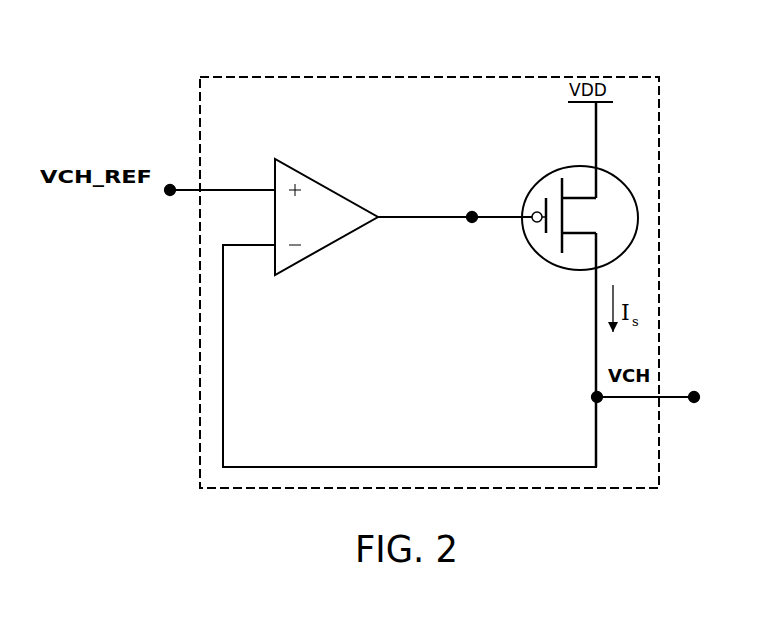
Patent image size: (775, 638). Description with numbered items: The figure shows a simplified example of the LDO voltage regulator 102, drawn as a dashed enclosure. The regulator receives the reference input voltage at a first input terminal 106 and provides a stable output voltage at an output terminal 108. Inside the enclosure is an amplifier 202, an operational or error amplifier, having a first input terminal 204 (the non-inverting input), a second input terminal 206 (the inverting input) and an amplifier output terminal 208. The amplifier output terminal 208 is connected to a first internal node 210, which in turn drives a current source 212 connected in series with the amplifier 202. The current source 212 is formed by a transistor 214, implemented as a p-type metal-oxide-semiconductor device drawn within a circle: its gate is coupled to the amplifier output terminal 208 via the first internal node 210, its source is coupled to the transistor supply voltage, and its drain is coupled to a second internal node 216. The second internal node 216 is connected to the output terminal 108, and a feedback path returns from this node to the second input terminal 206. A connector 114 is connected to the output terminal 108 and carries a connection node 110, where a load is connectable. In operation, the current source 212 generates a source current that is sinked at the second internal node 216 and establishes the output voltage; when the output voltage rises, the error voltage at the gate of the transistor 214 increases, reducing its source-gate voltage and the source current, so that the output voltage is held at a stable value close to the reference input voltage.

The LDO voltage regulator 102 is at (479, 73).
The first input terminal 106 is at (177, 180).
The output terminal 108 is at (645, 411).
The connection node 110 is at (703, 400).
The connector 114 is at (679, 391).
The amplifier 202 is at (326, 215).
The first input terminal 204 is at (237, 181).
The second input terminal 206 is at (410, 344).
The amplifier output terminal 208 is at (450, 206).
The first internal node 210 is at (472, 211).
The current source 212 is at (618, 174).
The transistor 214 is at (564, 215).
The second internal node 216 is at (586, 396).